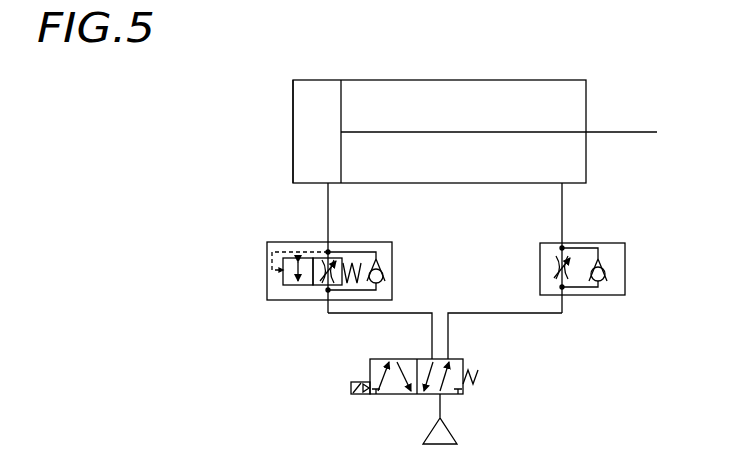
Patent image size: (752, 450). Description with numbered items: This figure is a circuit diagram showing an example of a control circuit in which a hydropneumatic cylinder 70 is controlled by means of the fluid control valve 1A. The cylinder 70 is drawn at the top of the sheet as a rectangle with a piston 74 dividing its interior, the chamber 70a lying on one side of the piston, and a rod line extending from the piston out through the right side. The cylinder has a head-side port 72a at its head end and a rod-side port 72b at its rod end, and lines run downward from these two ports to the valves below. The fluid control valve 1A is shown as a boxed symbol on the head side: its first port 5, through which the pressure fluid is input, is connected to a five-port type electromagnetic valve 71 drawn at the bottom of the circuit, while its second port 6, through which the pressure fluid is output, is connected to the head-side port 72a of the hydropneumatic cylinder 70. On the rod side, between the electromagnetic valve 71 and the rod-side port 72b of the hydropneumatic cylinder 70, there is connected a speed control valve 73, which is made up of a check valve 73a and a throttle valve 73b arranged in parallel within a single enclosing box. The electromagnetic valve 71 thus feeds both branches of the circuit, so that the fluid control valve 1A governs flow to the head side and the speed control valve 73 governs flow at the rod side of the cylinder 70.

The hydropneumatic cylinder 70 is at (541, 80).
The piston 74 is at (341, 98).
The cylinder chamber 70a is at (313, 141).
The head-side port 72a is at (329, 184).
The rod-side port 72b is at (563, 184).
The fluid control valve 1A is at (287, 273).
The second port 6 is at (327, 251).
The first port 5 is at (327, 291).
The speed control valve 73 is at (589, 268).
The check valve 73a is at (606, 276).
The throttle valve 73b is at (558, 262).
The five-port type electromagnetic valve 71 is at (464, 362).